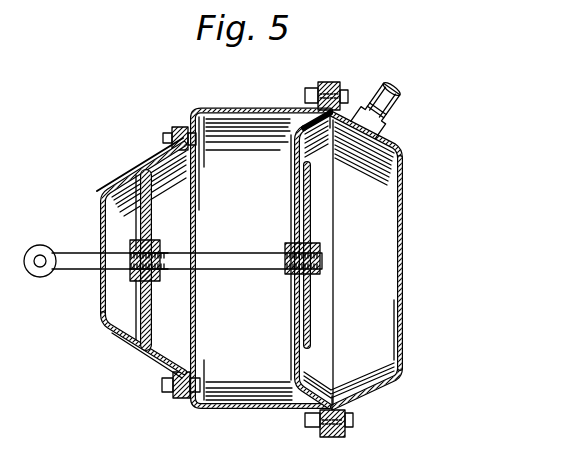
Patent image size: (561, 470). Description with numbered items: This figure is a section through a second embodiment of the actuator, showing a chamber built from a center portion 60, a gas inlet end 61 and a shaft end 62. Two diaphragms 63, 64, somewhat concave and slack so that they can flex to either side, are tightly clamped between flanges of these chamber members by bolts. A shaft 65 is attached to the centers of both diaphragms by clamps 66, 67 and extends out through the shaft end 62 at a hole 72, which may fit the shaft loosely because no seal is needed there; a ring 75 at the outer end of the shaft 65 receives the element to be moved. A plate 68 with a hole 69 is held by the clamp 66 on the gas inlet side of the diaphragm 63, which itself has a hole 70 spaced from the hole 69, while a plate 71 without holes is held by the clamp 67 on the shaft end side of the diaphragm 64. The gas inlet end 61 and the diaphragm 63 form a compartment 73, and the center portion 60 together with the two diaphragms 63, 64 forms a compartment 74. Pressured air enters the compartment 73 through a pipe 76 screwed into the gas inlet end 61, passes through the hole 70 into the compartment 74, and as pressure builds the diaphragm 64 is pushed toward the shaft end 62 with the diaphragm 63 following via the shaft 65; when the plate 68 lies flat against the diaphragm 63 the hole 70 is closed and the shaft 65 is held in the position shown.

The center portion 60 is at (236, 412).
The gas inlet end 61 is at (377, 384).
The shaft end 62 is at (115, 342).
The diaphragm 63 is at (293, 355).
The diaphragm 64 is at (140, 333).
The shaft 65 is at (216, 269).
The clamp 66 is at (280, 273).
The clamp 67 is at (130, 243).
The plate 68 is at (311, 289).
The hole 69 is at (311, 219).
The hole 70 is at (291, 210).
The plate 71 is at (137, 295).
The hole 72 is at (100, 240).
The compartment 73 is at (373, 314).
The compartment 74 is at (233, 362).
The ring 75 is at (36, 277).
The pipe 76 is at (398, 105).